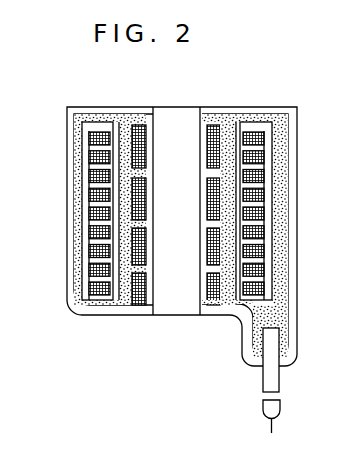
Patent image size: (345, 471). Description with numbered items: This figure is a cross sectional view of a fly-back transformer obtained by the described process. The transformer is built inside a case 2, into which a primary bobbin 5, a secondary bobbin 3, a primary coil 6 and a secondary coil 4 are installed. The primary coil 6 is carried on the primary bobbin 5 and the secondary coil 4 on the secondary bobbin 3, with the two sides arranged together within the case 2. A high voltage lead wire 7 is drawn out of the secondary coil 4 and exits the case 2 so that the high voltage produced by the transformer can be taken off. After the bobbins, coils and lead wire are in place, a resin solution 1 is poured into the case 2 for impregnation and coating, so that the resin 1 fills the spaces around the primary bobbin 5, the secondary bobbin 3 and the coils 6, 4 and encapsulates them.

The resin solution 1 is at (83, 133).
The case 2 is at (69, 165).
The secondary bobbin 3 is at (86, 205).
The secondary coil 4 is at (92, 233).
The primary bobbin 5 is at (145, 312).
The primary coil 6 is at (224, 133).
The high voltage lead wire 7 is at (273, 377).